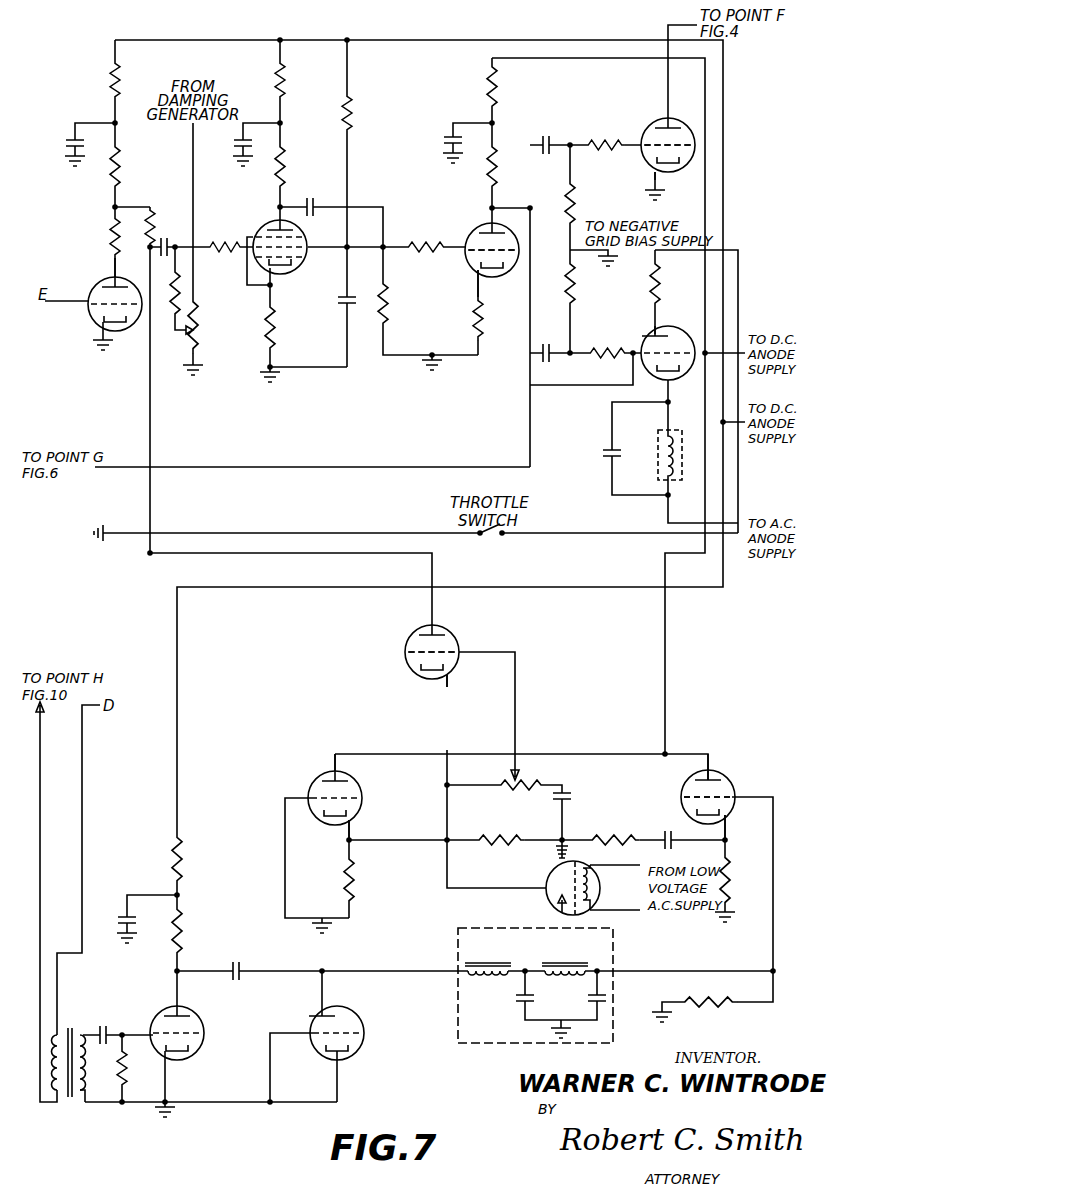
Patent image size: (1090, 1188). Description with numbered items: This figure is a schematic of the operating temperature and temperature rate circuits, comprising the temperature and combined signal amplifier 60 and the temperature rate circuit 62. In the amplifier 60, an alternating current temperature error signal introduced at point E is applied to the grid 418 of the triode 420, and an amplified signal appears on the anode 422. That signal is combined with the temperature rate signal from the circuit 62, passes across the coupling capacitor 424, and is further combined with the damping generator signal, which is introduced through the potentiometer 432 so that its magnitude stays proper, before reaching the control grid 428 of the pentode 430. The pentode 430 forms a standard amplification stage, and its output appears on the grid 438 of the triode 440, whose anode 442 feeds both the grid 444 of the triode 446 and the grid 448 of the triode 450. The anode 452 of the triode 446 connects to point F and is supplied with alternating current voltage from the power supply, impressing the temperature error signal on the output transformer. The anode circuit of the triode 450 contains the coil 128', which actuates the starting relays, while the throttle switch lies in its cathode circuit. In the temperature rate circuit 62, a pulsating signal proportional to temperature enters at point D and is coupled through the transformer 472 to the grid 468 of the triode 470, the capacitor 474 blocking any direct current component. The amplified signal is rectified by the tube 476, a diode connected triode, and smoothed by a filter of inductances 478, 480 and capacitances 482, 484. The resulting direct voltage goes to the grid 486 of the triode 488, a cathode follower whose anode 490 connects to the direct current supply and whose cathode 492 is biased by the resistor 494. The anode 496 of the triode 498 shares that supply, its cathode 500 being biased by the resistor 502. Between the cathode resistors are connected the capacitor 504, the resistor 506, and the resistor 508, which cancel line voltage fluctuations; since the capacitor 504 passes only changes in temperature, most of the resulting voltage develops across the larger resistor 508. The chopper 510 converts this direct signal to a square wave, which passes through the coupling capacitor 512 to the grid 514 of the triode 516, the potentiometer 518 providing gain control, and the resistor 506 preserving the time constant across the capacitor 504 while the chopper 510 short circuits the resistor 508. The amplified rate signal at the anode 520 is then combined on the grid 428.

The grid 418 is at (88, 318).
The triode 420 is at (110, 332).
The anode 422 is at (108, 276).
The coupling capacitor 424 is at (168, 246).
The control grid 428 is at (290, 268).
The pentode 430 is at (278, 296).
The potentiometer 432 is at (195, 330).
The grid 438 is at (465, 250).
The triode 440 is at (478, 272).
The anode 442 is at (482, 224).
The grid 444 is at (650, 160).
The triode 446 is at (655, 175).
The grid 448 is at (648, 334).
The triode 450 is at (670, 330).
The anode 452 is at (662, 118).
The coil 128' is at (642, 448).
The grid 514 is at (410, 650).
The triode 516 is at (415, 672).
The potentiometer 518 is at (530, 780).
The anode 520 is at (430, 625).
The coupling capacitor 512 is at (570, 795).
The resistor 508 is at (520, 822).
The resistor 506 is at (614, 825).
The capacitor 504 is at (672, 822).
The chopper 510 is at (552, 878).
The anode 496 is at (330, 771).
The triode 498 is at (311, 790).
The cathode 500 is at (360, 806).
The resistor 502 is at (349, 880).
The grid 486 is at (732, 785).
The triode 488 is at (720, 770).
The anode 490 is at (685, 785).
The cathode 492 is at (715, 812).
The resistor 494 is at (726, 866).
The inductance 478 is at (504, 946).
The inductance 480 is at (580, 946).
The capacitance 482 is at (518, 1000).
The capacitance 484 is at (590, 1000).
The transformer 472 is at (98, 1028).
The capacitor 474 is at (122, 1040).
The triode 470 is at (203, 1018).
The grid 468 is at (198, 1046).
The tube 476 is at (362, 1018).
The temperature and combined signal amplifier 60 is at (426, 420).
The temperature rate circuit 62 is at (435, 1067).